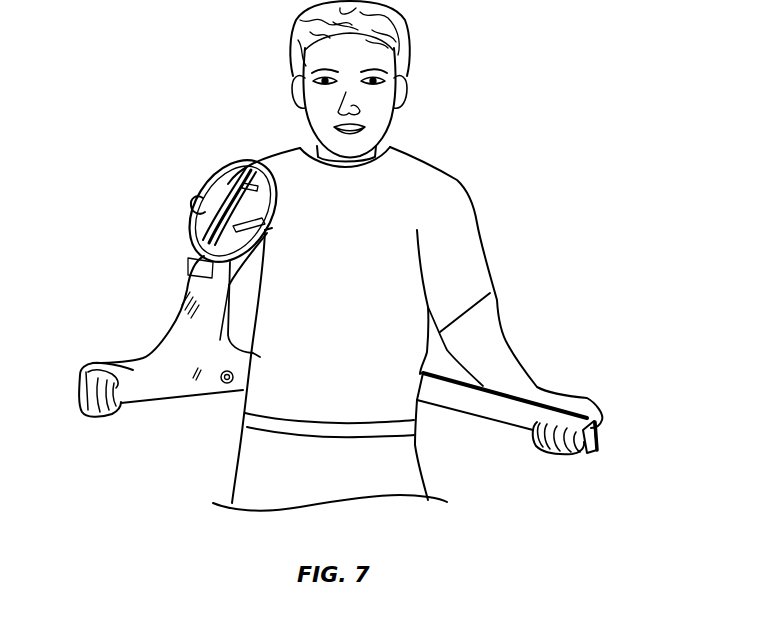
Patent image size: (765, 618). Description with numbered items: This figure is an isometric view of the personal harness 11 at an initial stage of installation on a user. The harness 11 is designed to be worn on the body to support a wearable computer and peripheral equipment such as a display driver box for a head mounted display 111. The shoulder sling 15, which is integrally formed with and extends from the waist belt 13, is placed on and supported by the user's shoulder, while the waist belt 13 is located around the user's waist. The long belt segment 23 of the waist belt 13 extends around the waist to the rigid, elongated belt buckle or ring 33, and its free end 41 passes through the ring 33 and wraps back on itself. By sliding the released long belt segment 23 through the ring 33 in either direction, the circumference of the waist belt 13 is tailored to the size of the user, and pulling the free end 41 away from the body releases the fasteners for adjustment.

The personal harness 11 is at (133, 223).
The head mounted display 111 is at (232, 163).
The shoulder sling 15 is at (268, 152).
The belt buckle or ring 33 is at (80, 380).
The waist belt 13 is at (474, 428).
The long belt segment 23 is at (523, 400).
The free end 41 is at (593, 447).